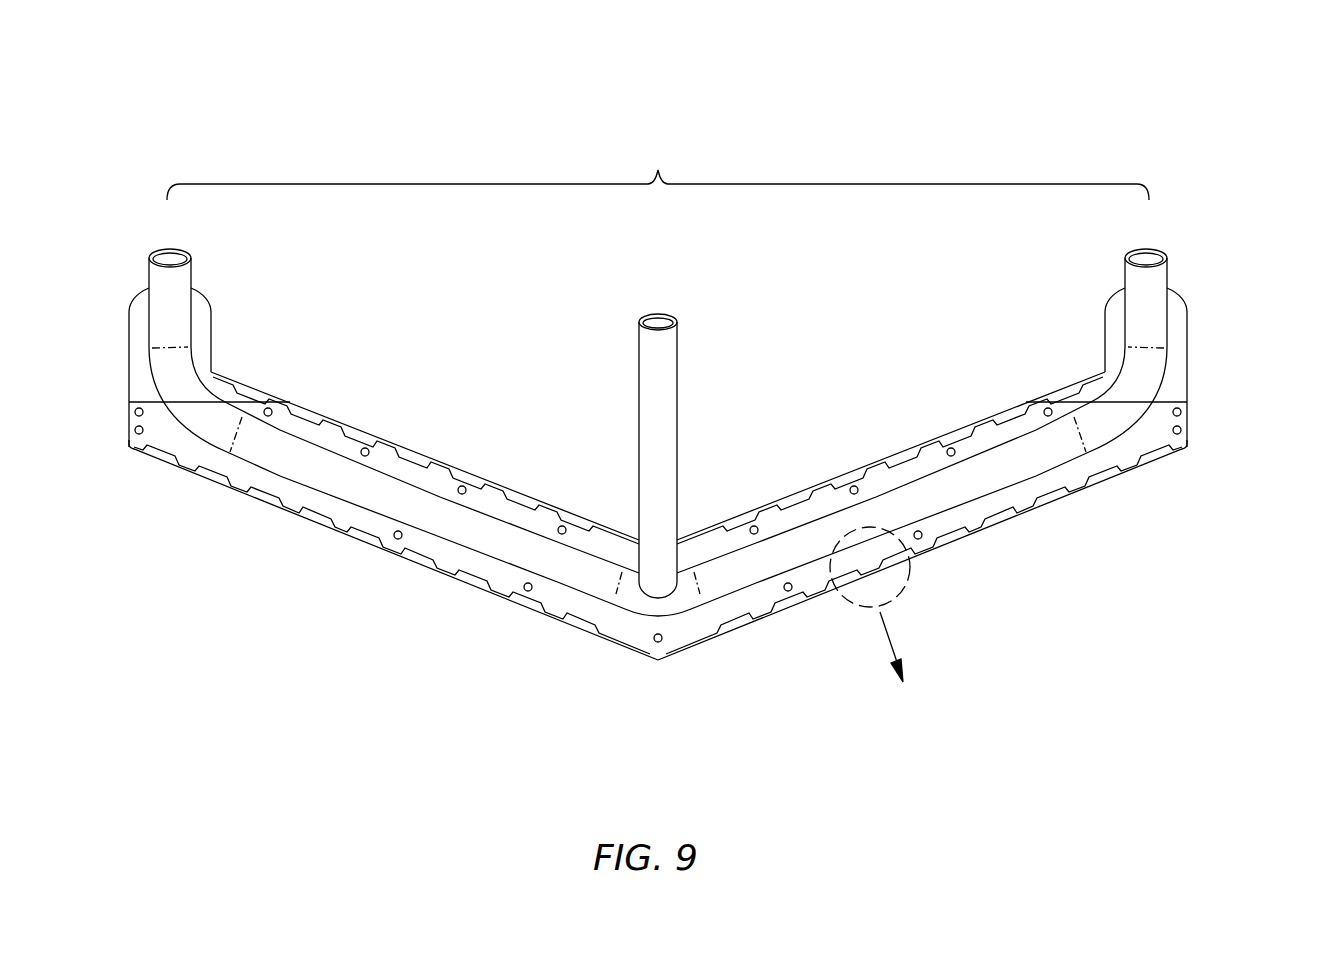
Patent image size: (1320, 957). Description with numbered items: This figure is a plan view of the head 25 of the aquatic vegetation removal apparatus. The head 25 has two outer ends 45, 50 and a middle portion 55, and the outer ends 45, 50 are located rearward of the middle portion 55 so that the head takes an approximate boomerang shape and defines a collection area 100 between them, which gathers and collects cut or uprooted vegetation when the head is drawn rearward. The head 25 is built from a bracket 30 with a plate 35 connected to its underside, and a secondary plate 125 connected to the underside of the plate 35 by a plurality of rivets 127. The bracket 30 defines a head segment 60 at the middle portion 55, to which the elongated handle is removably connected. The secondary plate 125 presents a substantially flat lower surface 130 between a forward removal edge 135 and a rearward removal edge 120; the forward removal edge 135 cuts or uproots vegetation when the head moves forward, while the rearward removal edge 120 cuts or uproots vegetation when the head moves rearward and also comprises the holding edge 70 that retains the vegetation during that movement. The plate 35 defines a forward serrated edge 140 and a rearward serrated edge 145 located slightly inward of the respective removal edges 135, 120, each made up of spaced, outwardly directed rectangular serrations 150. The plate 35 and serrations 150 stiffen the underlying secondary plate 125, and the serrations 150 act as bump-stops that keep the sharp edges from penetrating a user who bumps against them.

The head 25 is at (123, 132).
The collection area 100 is at (658, 169).
The outer end 45 is at (100, 296).
The outer end 50 is at (1228, 330).
The head segment 60 is at (665, 382).
The bracket 30 is at (764, 570).
The holding edge 70 is at (345, 393).
The rearward removal edge 120 is at (425, 450).
The secondary plate 125 is at (878, 466).
The rearward serrated edge 145 is at (805, 476).
The lower surface 130 is at (268, 518).
The forward removal edge 135 is at (345, 578).
The plate 35 is at (992, 508).
The rivets 127 is at (1063, 494).
The middle portion 55 is at (572, 657).
The forward serrated edge 140 is at (858, 594).
The rectangular serrations 150 is at (763, 522).